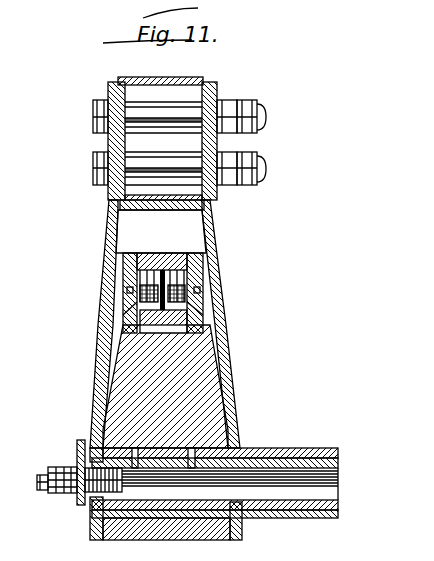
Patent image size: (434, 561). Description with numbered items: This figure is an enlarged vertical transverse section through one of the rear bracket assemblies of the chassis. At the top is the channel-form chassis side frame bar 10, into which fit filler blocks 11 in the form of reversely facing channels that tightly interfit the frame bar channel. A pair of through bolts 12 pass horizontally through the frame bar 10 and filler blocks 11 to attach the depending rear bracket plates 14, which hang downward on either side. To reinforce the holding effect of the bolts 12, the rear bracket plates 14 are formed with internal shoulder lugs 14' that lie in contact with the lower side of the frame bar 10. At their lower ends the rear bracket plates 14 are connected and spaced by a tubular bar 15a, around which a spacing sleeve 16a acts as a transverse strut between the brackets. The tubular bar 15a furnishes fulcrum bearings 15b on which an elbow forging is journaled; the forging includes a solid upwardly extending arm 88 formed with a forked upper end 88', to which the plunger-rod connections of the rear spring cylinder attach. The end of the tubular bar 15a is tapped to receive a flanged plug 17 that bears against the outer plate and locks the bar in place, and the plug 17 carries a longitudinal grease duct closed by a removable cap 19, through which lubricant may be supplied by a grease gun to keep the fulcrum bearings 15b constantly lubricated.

The chassis side frame bar 10 is at (137, 77).
The filler blocks 11 is at (168, 145).
The through bolts 12 is at (266, 117).
The rear bracket plates 14 is at (160, 324).
The internal shoulder lugs 14' is at (161, 231).
The forked upper end 88' is at (194, 280).
The solid upwardly extending arm 88 is at (183, 386).
The spacing sleeve 16a is at (263, 432).
The tubular bar 15a is at (310, 437).
The fulcrum bearings 15b is at (140, 503).
The flanged plugs 17 is at (70, 445).
The removable caps 19 is at (38, 490).